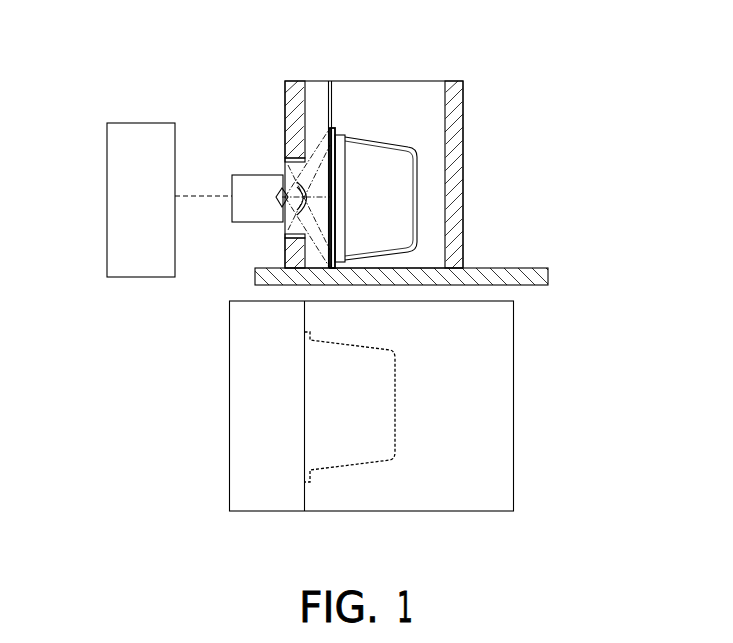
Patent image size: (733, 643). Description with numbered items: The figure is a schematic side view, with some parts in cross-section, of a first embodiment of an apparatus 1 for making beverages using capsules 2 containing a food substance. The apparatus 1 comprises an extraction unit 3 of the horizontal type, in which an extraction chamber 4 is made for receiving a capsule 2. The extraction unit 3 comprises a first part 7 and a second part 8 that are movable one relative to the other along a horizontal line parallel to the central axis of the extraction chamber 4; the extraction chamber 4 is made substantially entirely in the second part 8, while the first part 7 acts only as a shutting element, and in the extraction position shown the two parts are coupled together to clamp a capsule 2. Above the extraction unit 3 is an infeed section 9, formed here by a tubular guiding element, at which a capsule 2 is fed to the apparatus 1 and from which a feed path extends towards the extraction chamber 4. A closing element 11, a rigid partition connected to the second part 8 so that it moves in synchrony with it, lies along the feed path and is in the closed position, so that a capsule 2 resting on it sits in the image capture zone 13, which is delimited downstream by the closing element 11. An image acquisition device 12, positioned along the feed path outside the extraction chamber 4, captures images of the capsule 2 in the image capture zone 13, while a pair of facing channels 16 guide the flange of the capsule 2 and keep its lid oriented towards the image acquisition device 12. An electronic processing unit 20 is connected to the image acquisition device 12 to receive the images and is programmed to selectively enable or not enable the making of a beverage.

The apparatus 1 is at (572, 186).
The capsule 2 is at (380, 192).
The extraction unit 3 is at (540, 472).
The extraction chamber 4 is at (353, 407).
The first part 7 is at (272, 467).
The second part 8 is at (458, 483).
The infeed section 9 is at (403, 67).
The closing element 11 is at (488, 273).
The image acquisition device 12 is at (262, 200).
The image capture zone 13 is at (433, 212).
The channels 16 is at (336, 107).
The electronic processing unit 20 is at (123, 237).